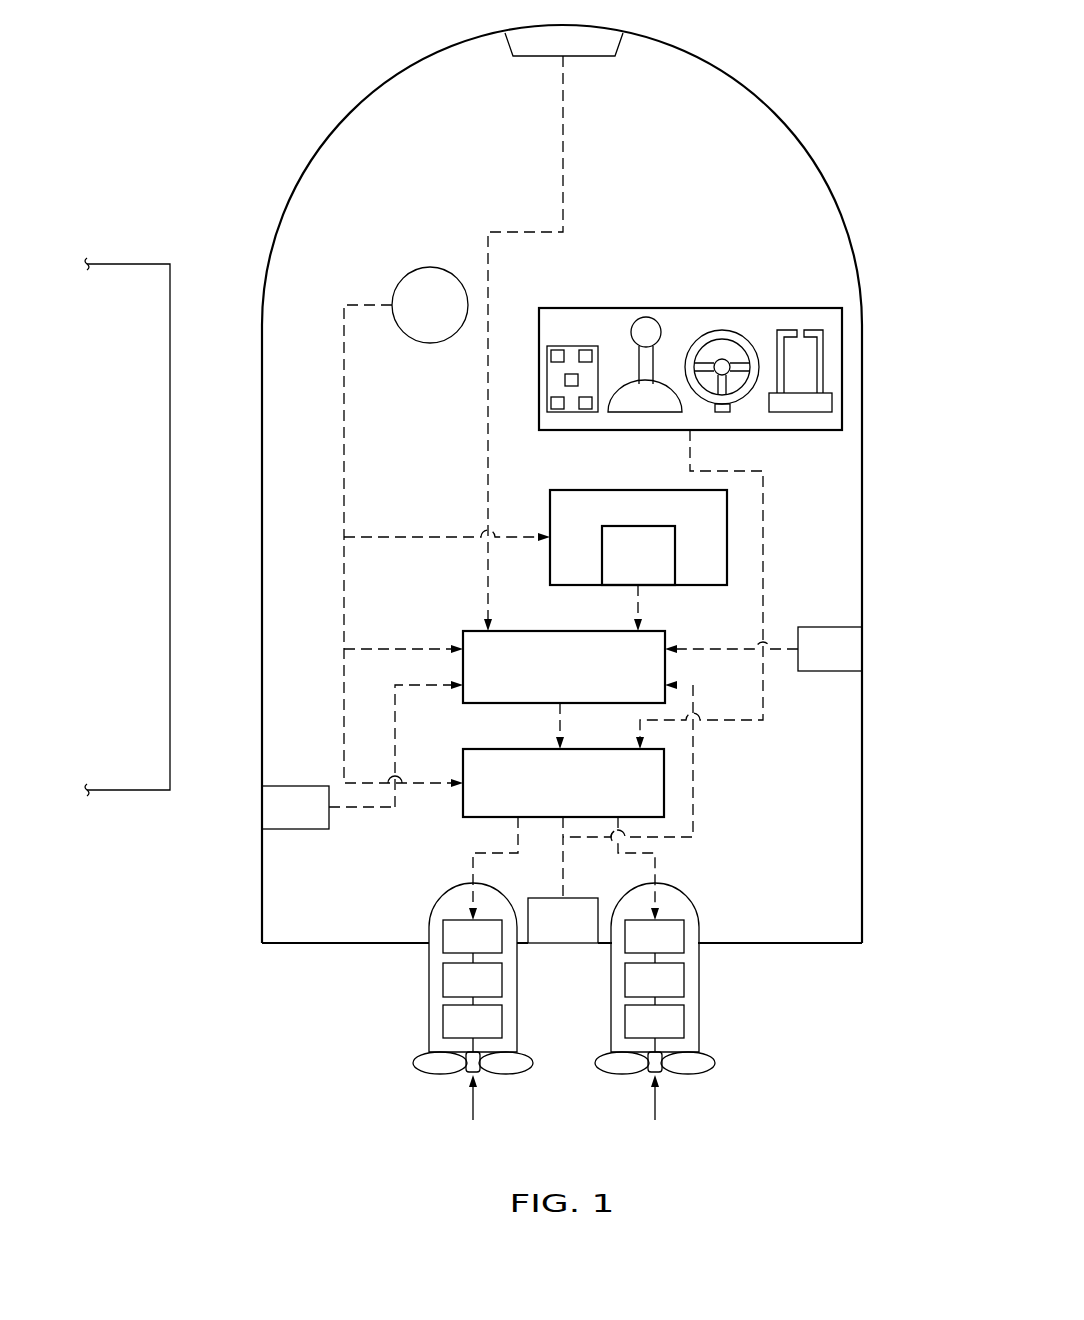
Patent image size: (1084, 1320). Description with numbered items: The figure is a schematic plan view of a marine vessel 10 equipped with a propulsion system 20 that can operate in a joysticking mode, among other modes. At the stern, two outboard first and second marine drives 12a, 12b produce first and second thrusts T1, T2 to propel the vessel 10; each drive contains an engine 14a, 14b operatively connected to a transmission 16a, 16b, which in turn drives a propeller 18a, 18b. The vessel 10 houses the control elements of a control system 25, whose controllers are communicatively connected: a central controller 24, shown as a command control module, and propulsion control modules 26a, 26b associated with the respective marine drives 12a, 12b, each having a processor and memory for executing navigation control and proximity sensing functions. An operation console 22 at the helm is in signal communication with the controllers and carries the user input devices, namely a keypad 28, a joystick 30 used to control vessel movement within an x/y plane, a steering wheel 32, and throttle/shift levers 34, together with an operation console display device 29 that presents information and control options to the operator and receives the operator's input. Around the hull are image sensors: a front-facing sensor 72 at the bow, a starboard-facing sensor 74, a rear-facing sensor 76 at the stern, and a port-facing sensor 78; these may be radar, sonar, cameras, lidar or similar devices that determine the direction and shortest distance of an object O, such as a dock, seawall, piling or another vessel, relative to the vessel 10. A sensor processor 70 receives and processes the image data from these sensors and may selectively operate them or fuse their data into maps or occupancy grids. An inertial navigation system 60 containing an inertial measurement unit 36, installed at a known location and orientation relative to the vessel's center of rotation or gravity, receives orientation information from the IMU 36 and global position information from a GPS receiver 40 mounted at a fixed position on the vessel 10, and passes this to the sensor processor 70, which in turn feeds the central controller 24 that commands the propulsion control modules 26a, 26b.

The marine vessel 10 is at (843, 208).
The propulsion system 20 is at (742, 150).
The front-facing image sensor 72 is at (598, 43).
The GPS receiver 40 is at (411, 274).
The object O is at (131, 541).
The operation console 22 is at (652, 308).
The keypad 28 is at (565, 346).
The operation console display device 29 is at (612, 357).
The joystick 30 is at (655, 372).
The steering wheel 32 is at (722, 330).
The throttle/shift lever 34 is at (787, 330).
The inertial navigation system 60 is at (572, 490).
The inertial measurement unit 36 is at (640, 526).
The sensor processor 70 is at (565, 631).
The central controller 24 is at (664, 773).
The control system 25 is at (666, 806).
The starboard-facing image sensor 74 is at (848, 627).
The port-facing image sensor 78 is at (282, 786).
The rear-facing image sensor 76 is at (562, 928).
The first marine drive 12a is at (455, 885).
The second marine drive 12b is at (672, 890).
The first propulsion control module 26a is at (452, 920).
The second propulsion control module 26b is at (678, 920).
The first engine 14a is at (443, 978).
The second engine 14b is at (684, 978).
The first transmission 16a is at (443, 1020).
The second transmission 16b is at (684, 1020).
The first propeller 18a is at (414, 1063).
The second propeller 18b is at (714, 1063).
The first thrust T1 is at (473, 1103).
The second thrust T2 is at (655, 1103).